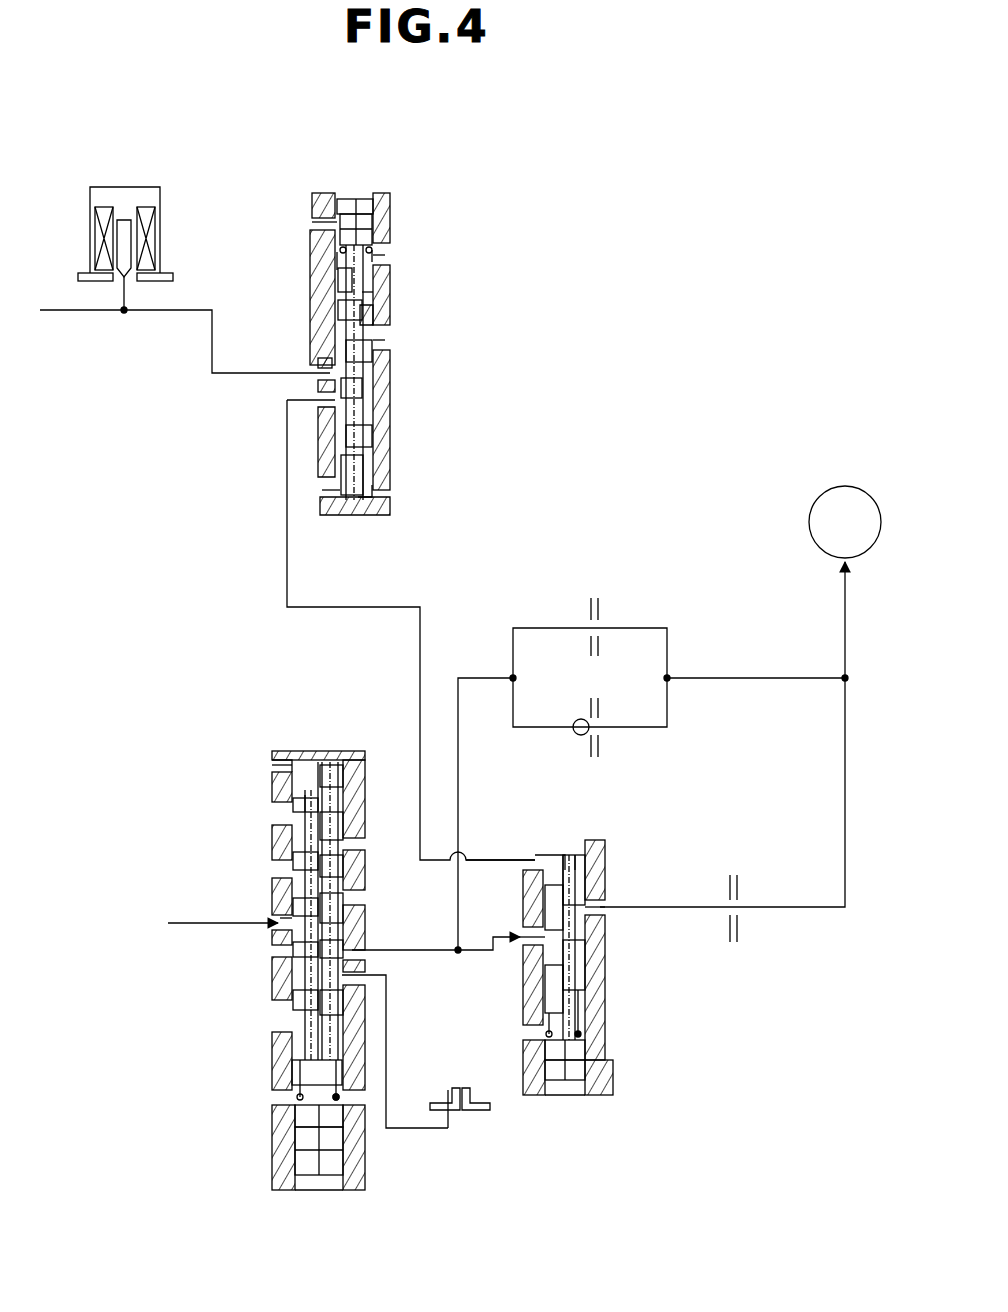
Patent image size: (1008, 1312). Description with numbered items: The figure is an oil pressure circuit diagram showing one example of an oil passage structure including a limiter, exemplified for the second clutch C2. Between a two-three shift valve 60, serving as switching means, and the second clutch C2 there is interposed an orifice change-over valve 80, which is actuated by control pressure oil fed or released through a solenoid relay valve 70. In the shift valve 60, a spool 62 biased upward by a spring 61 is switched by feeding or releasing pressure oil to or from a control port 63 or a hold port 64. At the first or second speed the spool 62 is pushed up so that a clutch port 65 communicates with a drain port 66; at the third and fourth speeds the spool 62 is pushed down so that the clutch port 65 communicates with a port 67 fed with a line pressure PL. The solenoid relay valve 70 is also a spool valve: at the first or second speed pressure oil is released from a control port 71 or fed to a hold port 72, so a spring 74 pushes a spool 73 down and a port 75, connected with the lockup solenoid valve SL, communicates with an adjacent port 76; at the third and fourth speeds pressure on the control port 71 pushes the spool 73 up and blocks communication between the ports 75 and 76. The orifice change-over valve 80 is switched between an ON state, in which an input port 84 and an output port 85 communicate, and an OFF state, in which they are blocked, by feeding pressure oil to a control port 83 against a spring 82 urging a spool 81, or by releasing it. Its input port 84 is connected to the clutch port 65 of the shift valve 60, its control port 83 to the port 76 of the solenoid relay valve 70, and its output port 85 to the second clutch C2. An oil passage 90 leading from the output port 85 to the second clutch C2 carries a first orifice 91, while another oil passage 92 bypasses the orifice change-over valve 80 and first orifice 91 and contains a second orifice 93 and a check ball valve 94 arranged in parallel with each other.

The lockup solenoid valve SL is at (160, 187).
The solenoid relay valve 70 is at (442, 180).
The control port 71 is at (330, 488).
The hold port 72 is at (372, 256).
The spool 73 is at (372, 350).
The spring 74 is at (370, 296).
The port 75 is at (330, 360).
The port 76 is at (330, 403).
The 2-3 shift valve 60 is at (245, 1173).
The spring 61 is at (345, 1098).
The spool 62 is at (308, 810).
The control port 63 is at (290, 765).
The hold port 64 is at (290, 1097).
The clutch port 65 is at (358, 946).
The drain port 66 is at (360, 972).
The port 67 is at (290, 920).
The line pressure PL is at (201, 924).
The orifice change-over valve 80 is at (624, 1083).
The spool 81 is at (590, 870).
The spring 82 is at (580, 1034).
The control port 83 is at (530, 858).
The input port 84 is at (520, 945).
The output port 85 is at (598, 912).
The oil passage 90 is at (803, 908).
The first orifice 91 is at (740, 899).
The oil passage 92 is at (472, 678).
The second orifice 93 is at (602, 620).
The check ball valve 94 is at (600, 733).
The second clutch C2 is at (845, 582).